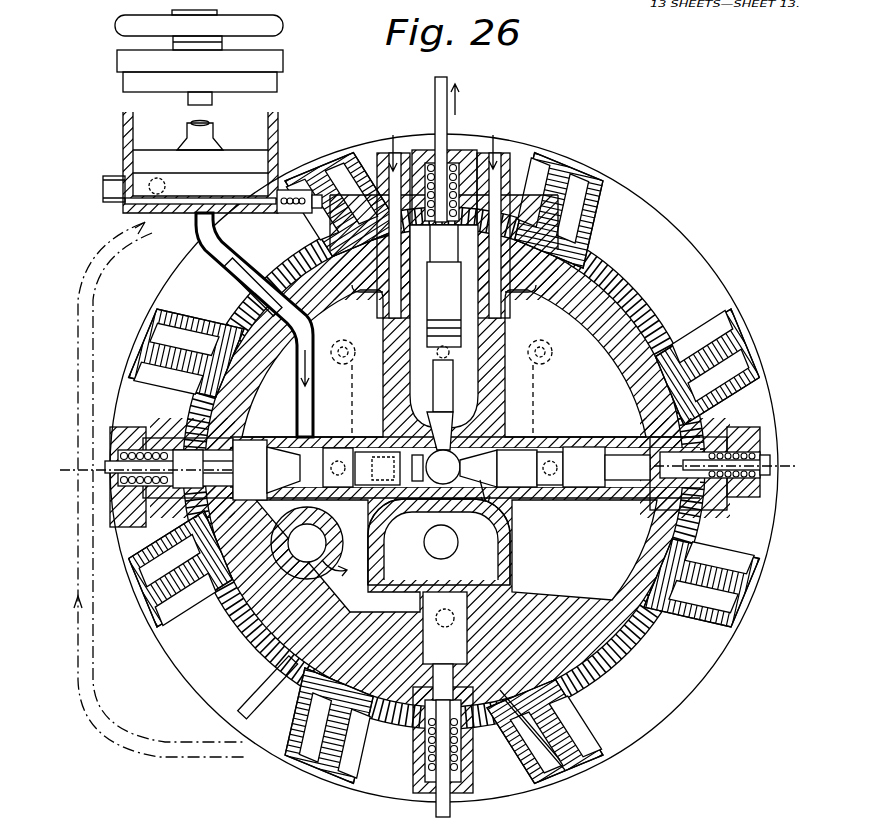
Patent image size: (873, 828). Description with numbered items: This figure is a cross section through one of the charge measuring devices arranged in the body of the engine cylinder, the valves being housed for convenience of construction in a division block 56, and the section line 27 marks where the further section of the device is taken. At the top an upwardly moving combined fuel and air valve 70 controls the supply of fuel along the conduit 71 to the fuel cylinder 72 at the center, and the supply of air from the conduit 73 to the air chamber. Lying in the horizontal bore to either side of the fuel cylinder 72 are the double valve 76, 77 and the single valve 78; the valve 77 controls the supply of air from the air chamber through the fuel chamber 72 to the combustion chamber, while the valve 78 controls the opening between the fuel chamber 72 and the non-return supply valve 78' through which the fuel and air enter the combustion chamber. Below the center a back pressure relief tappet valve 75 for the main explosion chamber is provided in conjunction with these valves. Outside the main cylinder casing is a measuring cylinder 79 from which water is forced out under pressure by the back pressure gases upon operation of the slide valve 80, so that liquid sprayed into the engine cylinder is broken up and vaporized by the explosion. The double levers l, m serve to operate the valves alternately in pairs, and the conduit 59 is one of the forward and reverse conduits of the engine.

The section line 27— 27 is at (424, 477).
The division block 56 is at (584, 550).
The reverse conduit 59 is at (560, 762).
The combined fuel and air valve 70 is at (440, 102).
The conduit 71 is at (500, 392).
The cylinder 72 is at (443, 467).
The conduit 73 is at (422, 333).
The back pressure relief tappet valve 75 is at (443, 704).
The double valve 76 is at (293, 470).
The double valve 77 is at (389, 468).
The single valve 78 is at (555, 467).
The non-return supply valve 78' is at (439, 542).
The measuring cylinder 79 is at (183, 183).
The slide valve 80 is at (230, 205).
The double lever l is at (342, 407).
The double lever m is at (560, 405).